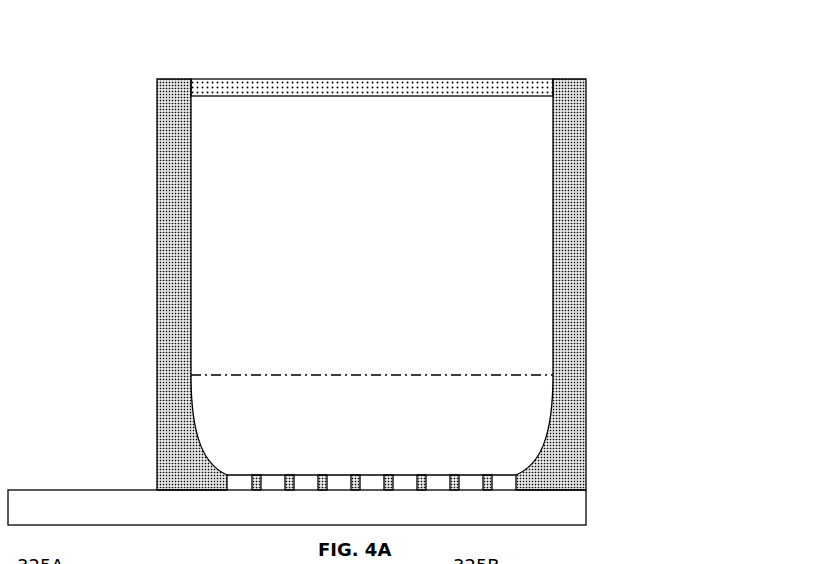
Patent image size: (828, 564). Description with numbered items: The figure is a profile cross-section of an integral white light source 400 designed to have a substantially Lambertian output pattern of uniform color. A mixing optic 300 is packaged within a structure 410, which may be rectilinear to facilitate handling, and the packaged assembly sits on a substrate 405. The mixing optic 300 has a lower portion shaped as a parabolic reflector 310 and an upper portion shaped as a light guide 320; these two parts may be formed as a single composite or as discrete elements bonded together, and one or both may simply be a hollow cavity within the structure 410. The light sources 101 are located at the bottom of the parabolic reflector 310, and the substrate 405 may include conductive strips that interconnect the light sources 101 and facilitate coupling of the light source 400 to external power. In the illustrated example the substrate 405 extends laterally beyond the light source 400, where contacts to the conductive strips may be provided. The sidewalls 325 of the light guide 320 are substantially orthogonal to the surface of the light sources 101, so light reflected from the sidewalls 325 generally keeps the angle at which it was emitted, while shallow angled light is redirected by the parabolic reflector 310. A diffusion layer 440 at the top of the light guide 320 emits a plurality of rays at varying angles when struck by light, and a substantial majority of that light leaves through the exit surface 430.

The light sources 101 is at (242, 482).
The mixing optic 300 is at (372, 288).
The parabolic reflector 310 is at (530, 409).
The light guide 320 is at (528, 243).
The sidewalls 325 is at (191, 242).
The light source 400 is at (374, 277).
The substrate 405 is at (552, 508).
The structure 410 is at (568, 311).
The exit surface 430 is at (388, 63).
The diffusion layer 440 is at (223, 89).